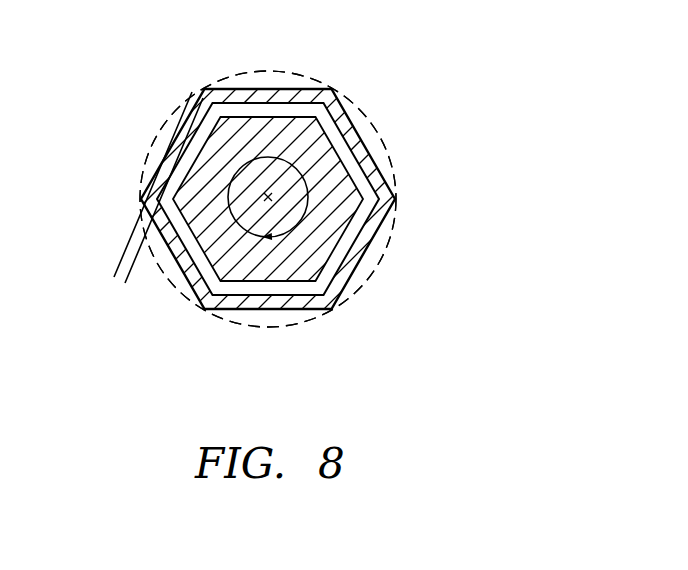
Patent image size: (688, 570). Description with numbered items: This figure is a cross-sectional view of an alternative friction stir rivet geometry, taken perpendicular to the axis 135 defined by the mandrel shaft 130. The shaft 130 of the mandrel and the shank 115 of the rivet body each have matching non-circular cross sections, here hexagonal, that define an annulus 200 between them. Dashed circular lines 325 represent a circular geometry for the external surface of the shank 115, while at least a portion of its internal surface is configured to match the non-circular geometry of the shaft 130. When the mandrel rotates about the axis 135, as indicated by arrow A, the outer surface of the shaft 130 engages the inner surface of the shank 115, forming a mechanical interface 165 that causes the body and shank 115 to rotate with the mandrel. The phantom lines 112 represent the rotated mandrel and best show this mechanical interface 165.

The phantom lines 112 is at (281, 114).
The shank 115 is at (353, 120).
The shaft 130 is at (352, 193).
The axis 135 is at (268, 197).
The mechanical interface 165 is at (251, 86).
The annulus 200 is at (112, 256).
The dashed circular lines 325 is at (270, 328).
The arrow A is at (227, 237).